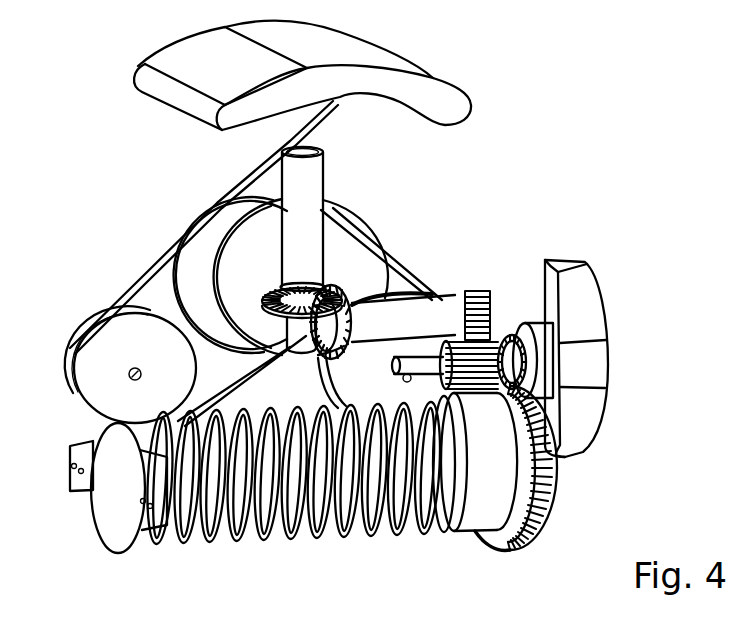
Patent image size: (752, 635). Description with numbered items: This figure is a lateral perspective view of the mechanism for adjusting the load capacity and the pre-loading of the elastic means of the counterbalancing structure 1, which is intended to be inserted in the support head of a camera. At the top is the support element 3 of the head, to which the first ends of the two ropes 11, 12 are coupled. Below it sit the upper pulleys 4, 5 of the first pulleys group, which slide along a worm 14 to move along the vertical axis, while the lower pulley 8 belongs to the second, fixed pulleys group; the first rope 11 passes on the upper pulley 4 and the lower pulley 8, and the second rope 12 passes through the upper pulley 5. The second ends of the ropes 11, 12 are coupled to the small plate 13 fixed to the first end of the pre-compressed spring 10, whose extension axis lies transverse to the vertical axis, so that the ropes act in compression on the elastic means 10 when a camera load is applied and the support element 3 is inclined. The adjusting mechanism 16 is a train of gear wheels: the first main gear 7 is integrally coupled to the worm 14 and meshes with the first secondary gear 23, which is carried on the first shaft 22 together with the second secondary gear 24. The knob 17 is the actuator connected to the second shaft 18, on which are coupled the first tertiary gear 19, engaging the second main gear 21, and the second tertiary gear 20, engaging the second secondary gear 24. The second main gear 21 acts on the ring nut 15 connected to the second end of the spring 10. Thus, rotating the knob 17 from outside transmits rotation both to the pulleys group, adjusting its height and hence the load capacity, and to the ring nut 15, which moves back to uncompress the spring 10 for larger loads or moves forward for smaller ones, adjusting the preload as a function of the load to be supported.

The counterbalancing structure 1 is at (361, 317).
The support element 3 is at (430, 82).
The upper pulley 4 is at (197, 217).
The upper pulley 5 is at (333, 213).
The first main gear 7 is at (300, 350).
The lower pulley 8 is at (72, 353).
The elastic means 10 is at (441, 530).
The first rope 11 is at (138, 287).
The second rope 12 is at (378, 232).
The plate 13 is at (123, 548).
The worm 14 is at (317, 178).
The ring nut 15 is at (479, 527).
The adjusting mechanism 16 is at (539, 322).
The knob 17 is at (586, 283).
The second shaft 18 is at (505, 333).
The first tertiary gear 19 is at (519, 292).
The second tertiary gear 20 is at (456, 338).
The second main gear 21 is at (536, 530).
The first shaft 22 is at (386, 317).
The first secondary gear 23 is at (313, 343).
The second secondary gear 24 is at (476, 292).